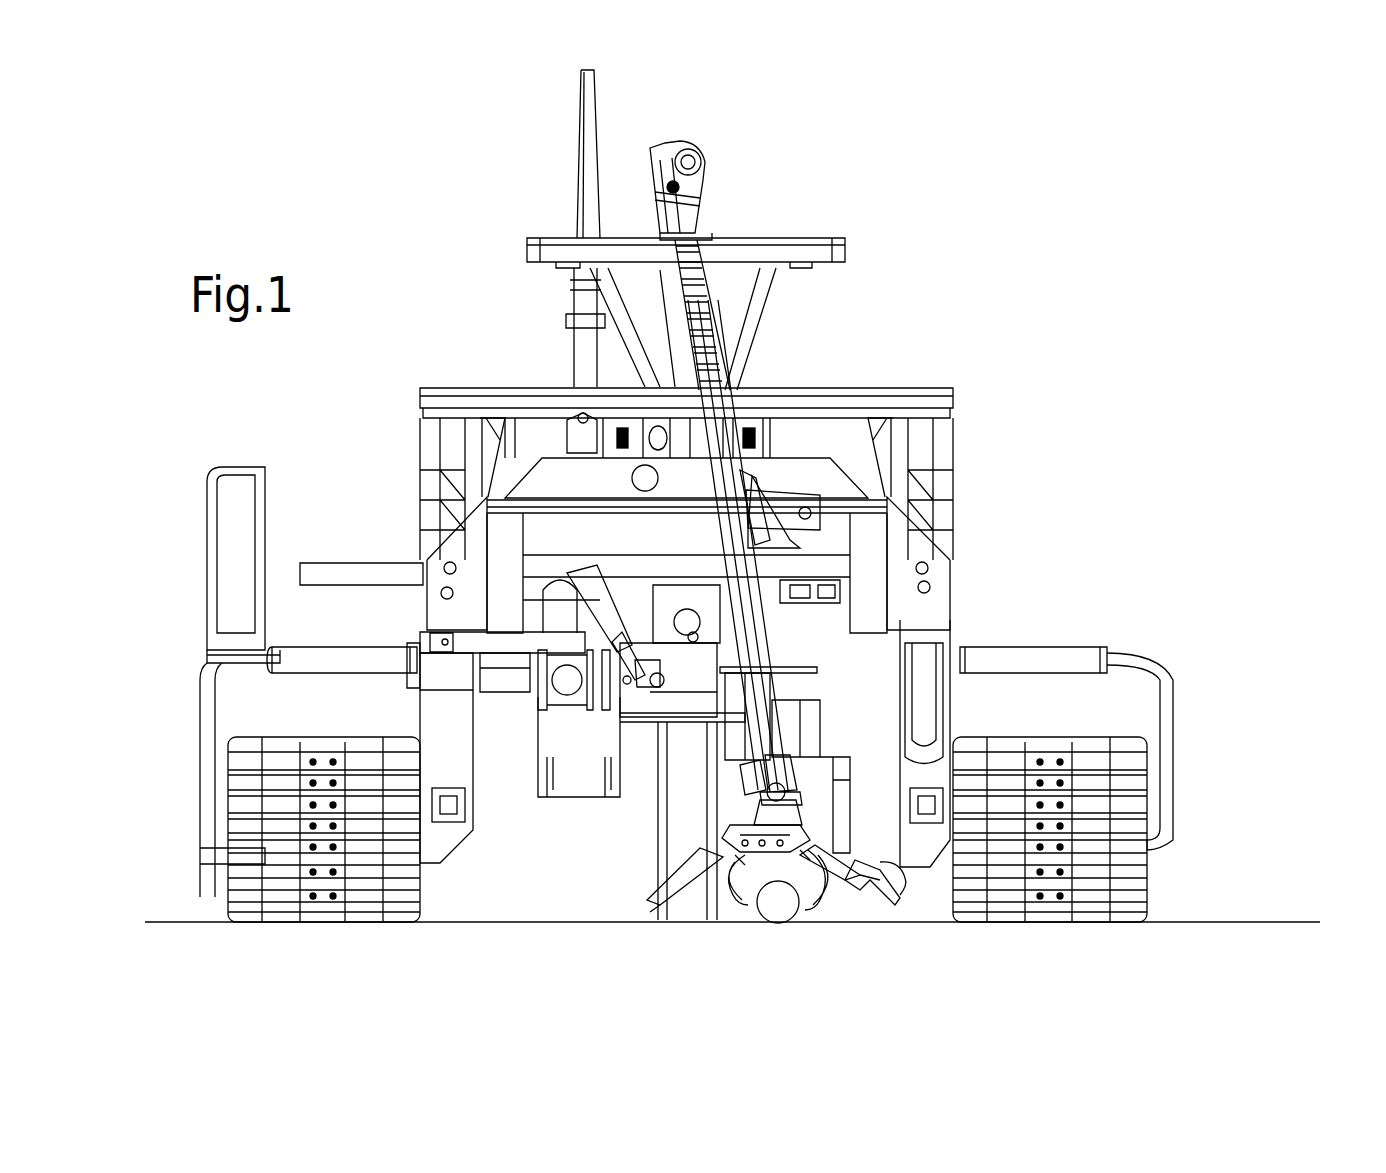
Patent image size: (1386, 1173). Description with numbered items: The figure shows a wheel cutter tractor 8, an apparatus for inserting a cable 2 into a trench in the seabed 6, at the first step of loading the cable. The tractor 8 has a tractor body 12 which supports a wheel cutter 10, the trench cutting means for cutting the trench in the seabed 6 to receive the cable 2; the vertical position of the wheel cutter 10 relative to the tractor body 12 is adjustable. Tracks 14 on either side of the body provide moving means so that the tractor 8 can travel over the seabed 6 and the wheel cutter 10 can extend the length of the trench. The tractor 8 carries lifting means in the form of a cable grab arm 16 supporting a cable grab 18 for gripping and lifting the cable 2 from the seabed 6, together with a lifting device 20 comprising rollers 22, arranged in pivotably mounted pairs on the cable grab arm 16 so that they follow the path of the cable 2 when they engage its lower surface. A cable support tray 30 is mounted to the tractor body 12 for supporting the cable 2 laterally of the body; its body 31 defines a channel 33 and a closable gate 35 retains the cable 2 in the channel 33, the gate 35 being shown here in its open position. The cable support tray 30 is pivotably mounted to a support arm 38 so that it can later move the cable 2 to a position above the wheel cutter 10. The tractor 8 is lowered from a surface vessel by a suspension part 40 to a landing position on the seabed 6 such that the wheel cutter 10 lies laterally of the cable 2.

The cable 2 is at (773, 905).
The seabed 6 is at (470, 927).
The wheel cutter tractor 8 is at (460, 293).
The wheel cutter 10 is at (680, 806).
The tractor body 12 is at (838, 450).
The tracks 14 is at (222, 907).
The cable grab arm 16 is at (702, 296).
The cable grab 18 is at (826, 908).
The lifting device 20 is at (728, 828).
The rollers 22 is at (905, 878).
The cable support tray 30 is at (822, 720).
The body 31 is at (793, 672).
The channel 33 is at (793, 742).
The closable gate 35 is at (835, 787).
The support arm 38 is at (768, 630).
The suspension part 40 is at (692, 143).